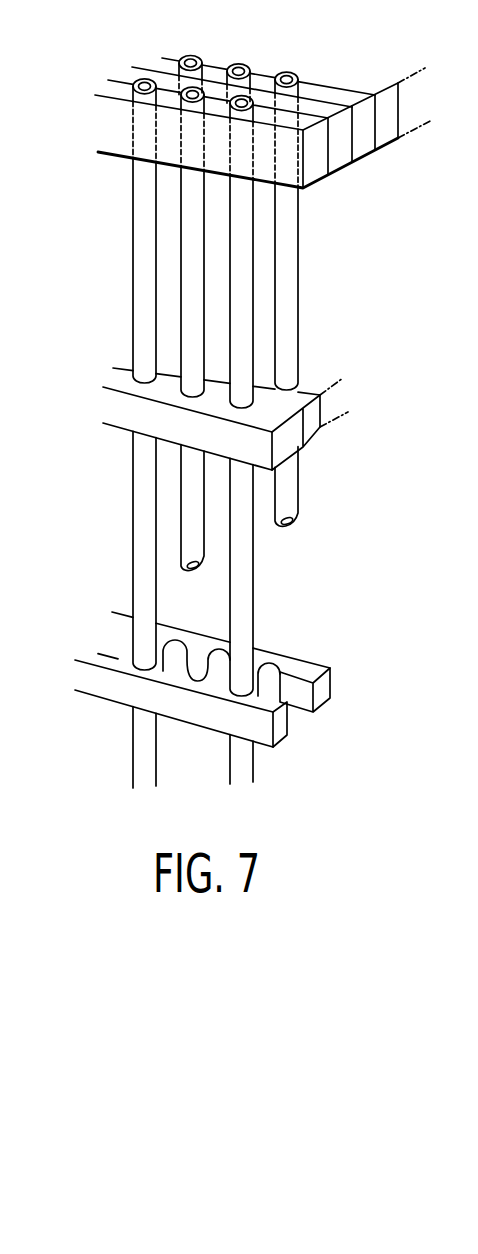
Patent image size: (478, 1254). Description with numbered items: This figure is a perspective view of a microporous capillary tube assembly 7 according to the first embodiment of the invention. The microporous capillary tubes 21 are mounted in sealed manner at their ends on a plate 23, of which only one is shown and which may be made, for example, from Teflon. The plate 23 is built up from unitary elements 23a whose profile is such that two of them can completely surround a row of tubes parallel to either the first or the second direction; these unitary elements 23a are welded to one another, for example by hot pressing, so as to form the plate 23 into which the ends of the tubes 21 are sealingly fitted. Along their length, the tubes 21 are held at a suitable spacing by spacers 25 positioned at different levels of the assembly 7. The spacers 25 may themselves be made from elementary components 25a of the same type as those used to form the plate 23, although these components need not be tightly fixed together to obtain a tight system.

The microporous capillary tube assembly 7 is at (250, 405).
The microporous capillary tubes 21 is at (243, 315).
The plate 23 is at (263, 119).
The unitary elements 23a is at (328, 93).
The spacers 25 is at (318, 448).
The elementary components 25a is at (263, 700).